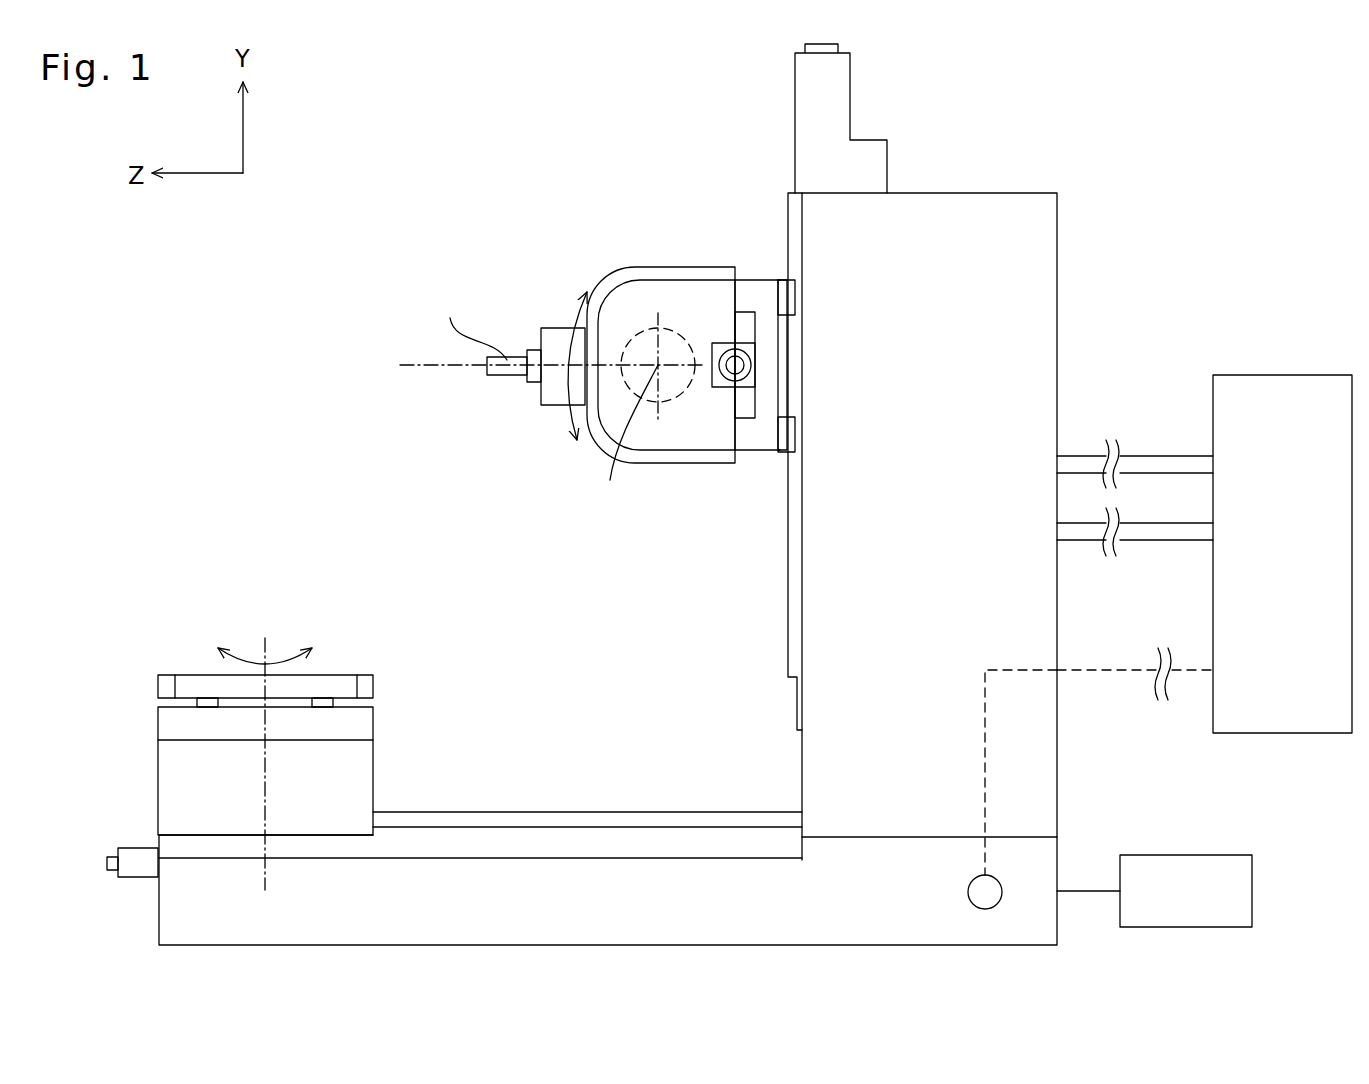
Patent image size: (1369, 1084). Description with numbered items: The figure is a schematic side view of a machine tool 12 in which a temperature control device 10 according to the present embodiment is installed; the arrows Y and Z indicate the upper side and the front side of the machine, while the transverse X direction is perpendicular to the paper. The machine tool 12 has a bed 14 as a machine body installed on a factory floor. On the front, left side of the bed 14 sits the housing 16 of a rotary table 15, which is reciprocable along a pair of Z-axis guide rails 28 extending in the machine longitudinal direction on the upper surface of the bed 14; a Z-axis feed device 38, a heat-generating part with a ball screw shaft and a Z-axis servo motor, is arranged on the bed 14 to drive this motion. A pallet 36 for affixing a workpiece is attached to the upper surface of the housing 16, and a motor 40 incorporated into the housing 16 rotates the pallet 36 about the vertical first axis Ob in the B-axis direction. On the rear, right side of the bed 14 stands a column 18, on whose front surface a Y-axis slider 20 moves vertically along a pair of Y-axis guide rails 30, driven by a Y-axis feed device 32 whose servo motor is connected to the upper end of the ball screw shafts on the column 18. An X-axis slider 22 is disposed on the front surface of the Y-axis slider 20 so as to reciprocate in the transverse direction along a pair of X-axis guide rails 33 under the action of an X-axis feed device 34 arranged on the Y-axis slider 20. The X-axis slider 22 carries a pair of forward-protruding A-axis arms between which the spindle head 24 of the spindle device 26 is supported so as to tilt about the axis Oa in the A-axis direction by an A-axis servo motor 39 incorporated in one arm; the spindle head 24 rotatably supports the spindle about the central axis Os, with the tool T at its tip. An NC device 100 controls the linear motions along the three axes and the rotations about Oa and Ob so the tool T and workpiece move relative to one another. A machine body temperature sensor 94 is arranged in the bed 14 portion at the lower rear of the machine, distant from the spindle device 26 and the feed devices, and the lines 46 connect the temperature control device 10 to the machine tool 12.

The temperature control device 10 is at (1196, 428).
The machine tool 12 is at (1124, 180).
The bed 14 is at (547, 907).
The rotary table 15 is at (389, 714).
The housing 16 is at (180, 782).
The column 18 is at (998, 218).
The Y-axis slider 20 is at (758, 292).
The X-axis slider 22 is at (680, 300).
The spindle head 24 is at (555, 348).
The spindle device 26 is at (547, 414).
The Z-axis guide rails 28 is at (622, 818).
The Y-axis guide rails 30 is at (797, 618).
The Y-axis feed device 32 is at (825, 98).
The X-axis guide rails 33 is at (740, 312).
The X-axis feed device 34 is at (733, 370).
The pallet 36 is at (192, 687).
The Z-axis feed device 38 is at (142, 874).
The A-axis servo motor 39 is at (637, 338).
The motor 40 is at (337, 785).
The fluid pipe 46 is at (1088, 455).
The machine body temperature sensor 94 is at (998, 906).
The NC device 100 is at (1145, 855).